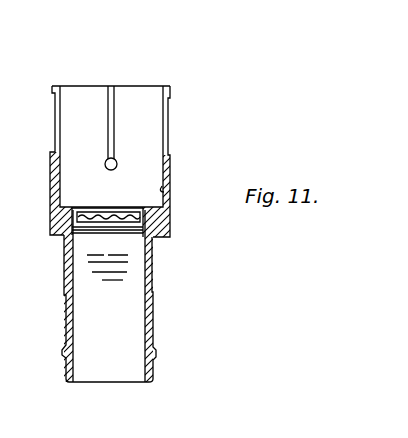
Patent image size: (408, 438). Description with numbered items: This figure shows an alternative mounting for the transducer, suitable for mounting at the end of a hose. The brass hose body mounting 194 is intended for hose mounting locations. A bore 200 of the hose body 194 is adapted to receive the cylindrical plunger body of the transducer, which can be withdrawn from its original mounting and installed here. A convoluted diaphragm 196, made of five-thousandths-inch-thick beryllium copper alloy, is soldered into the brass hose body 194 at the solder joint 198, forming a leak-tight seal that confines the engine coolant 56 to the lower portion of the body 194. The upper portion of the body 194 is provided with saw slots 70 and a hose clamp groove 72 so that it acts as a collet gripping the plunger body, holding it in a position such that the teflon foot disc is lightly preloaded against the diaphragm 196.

The saw slots 70 is at (58, 86).
The hose clamp groove 72 is at (168, 123).
The bore 200 is at (158, 186).
The convoluted diaphragm 196 is at (123, 230).
The solder joint 198 is at (103, 233).
The brass hose body mounting 194 is at (153, 292).
The engine coolant 56 is at (120, 283).